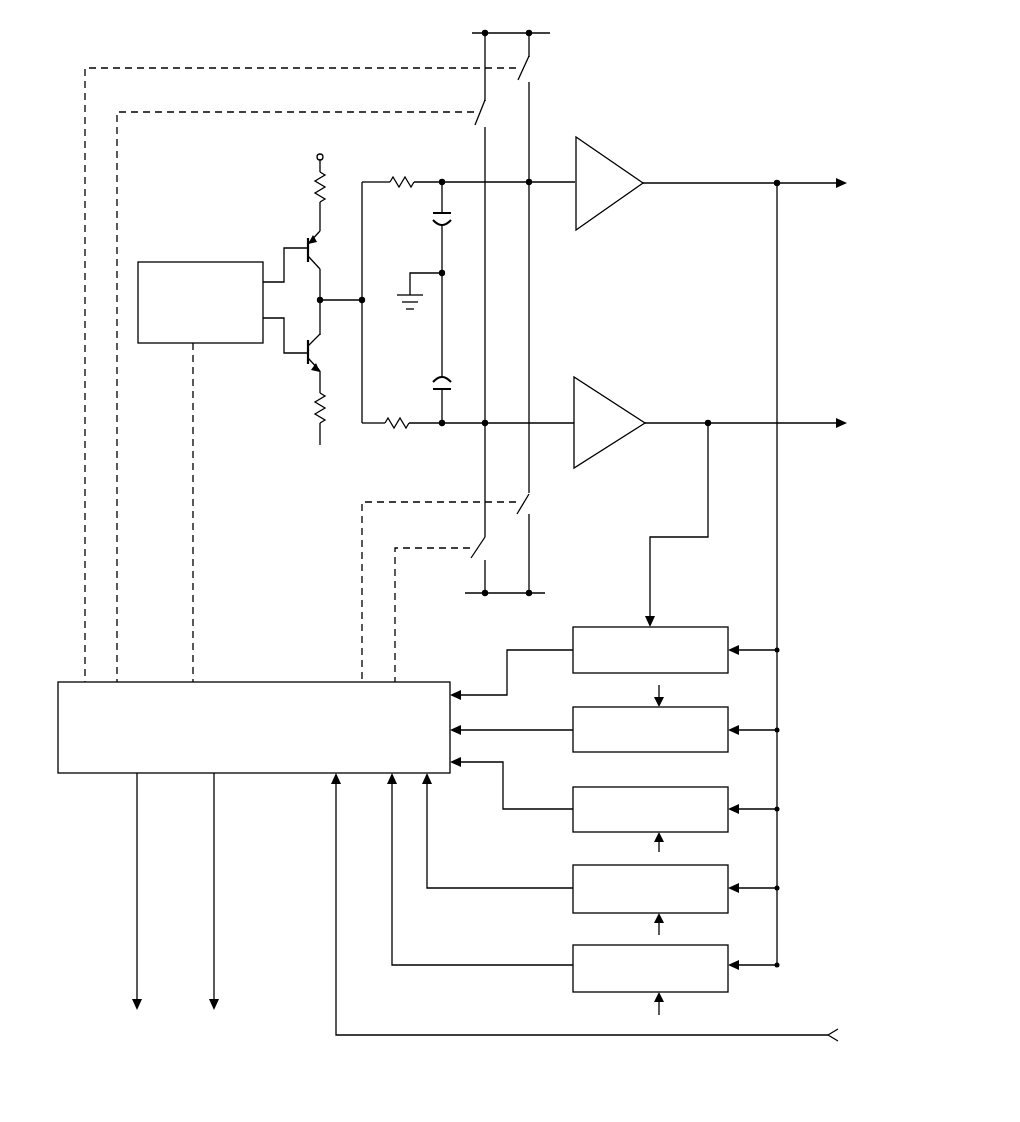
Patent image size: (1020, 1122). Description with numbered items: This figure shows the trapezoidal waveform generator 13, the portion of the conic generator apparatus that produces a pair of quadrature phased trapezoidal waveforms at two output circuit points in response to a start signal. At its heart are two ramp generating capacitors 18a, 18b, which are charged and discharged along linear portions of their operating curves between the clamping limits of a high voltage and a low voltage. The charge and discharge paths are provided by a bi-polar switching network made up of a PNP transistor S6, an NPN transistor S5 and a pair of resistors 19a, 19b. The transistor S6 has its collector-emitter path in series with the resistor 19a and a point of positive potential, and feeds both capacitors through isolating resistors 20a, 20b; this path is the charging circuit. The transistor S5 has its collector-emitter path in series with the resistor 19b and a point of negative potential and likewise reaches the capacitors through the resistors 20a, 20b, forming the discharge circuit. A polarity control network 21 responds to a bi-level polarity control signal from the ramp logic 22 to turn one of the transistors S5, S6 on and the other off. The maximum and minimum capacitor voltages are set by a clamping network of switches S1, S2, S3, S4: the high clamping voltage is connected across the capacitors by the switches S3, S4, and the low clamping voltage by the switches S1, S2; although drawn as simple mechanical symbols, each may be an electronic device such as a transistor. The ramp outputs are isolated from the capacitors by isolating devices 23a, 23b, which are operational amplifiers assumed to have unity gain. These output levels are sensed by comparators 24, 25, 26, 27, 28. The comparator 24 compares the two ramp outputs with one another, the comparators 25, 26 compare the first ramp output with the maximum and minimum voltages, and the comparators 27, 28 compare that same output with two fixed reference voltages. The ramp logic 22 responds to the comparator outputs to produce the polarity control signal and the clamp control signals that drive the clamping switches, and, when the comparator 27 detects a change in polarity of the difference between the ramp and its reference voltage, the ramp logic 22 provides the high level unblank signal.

The trapezoidal waveform generator 13 is at (636, 90).
The ramp generating capacitor 18a is at (432, 223).
The ramp generating capacitor 18b is at (417, 383).
The resistor 19a is at (298, 188).
The resistor 19b is at (298, 413).
The isolating resistor 20a is at (405, 190).
The isolating resistor 20b is at (400, 431).
The polarity control network 21 is at (205, 264).
The ramp logic 22 is at (405, 754).
The isolating device 23a is at (612, 206).
The isolating device 23b is at (602, 403).
The comparator 24 is at (612, 626).
The comparator 25 is at (573, 712).
The comparator 26 is at (573, 792).
The comparator 27 is at (571, 872).
The comparator 28 is at (571, 952).
The clamping switch S1 is at (546, 543).
The clamping switch S2 is at (467, 559).
The clamping switch S3 is at (542, 263).
The clamping switch S4 is at (468, 285).
The NPN transistor S5 is at (328, 353).
The PNP transistor S6 is at (328, 250).